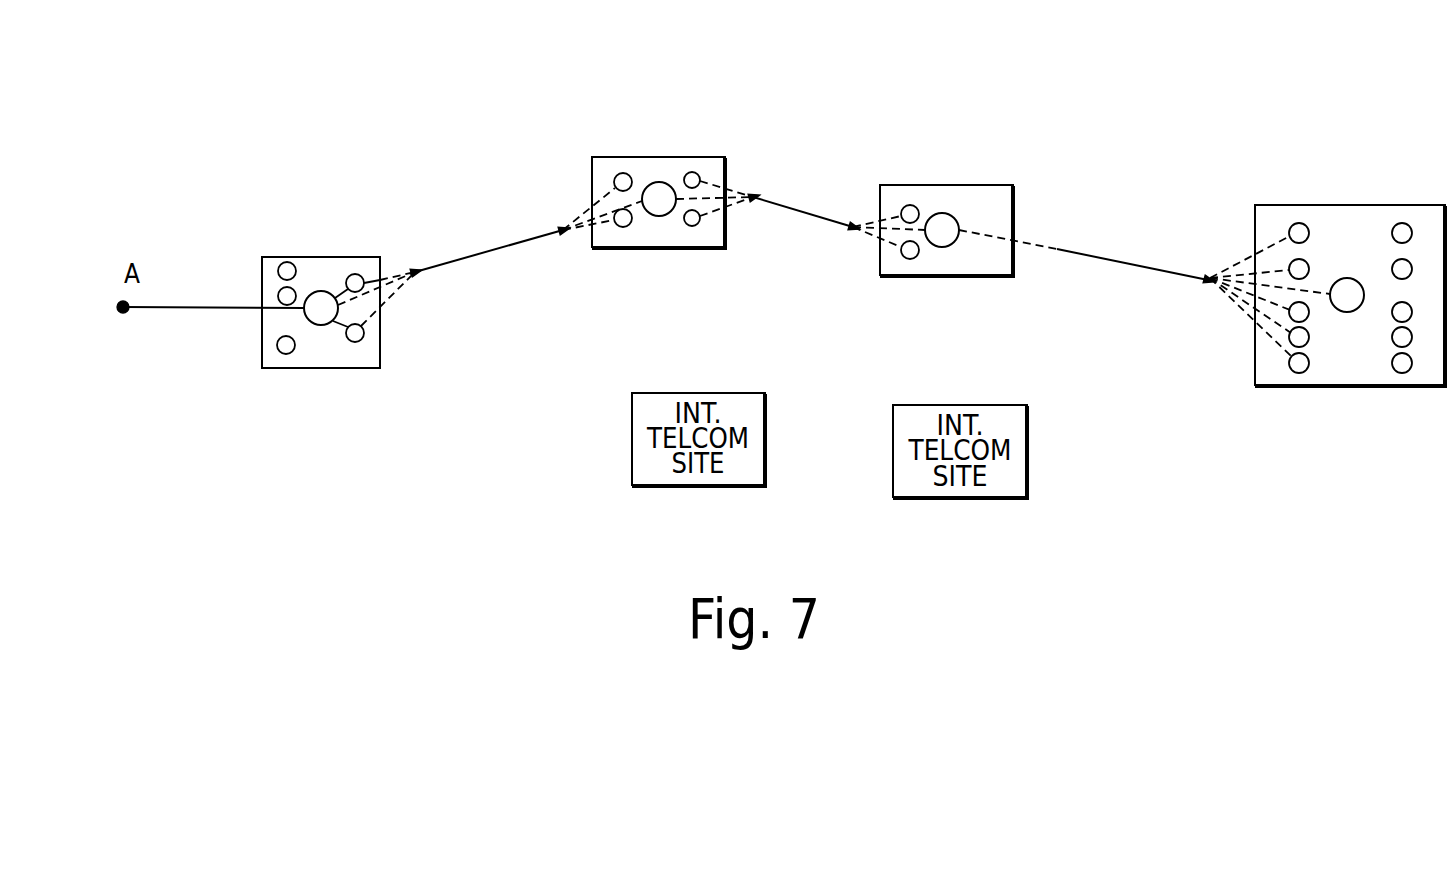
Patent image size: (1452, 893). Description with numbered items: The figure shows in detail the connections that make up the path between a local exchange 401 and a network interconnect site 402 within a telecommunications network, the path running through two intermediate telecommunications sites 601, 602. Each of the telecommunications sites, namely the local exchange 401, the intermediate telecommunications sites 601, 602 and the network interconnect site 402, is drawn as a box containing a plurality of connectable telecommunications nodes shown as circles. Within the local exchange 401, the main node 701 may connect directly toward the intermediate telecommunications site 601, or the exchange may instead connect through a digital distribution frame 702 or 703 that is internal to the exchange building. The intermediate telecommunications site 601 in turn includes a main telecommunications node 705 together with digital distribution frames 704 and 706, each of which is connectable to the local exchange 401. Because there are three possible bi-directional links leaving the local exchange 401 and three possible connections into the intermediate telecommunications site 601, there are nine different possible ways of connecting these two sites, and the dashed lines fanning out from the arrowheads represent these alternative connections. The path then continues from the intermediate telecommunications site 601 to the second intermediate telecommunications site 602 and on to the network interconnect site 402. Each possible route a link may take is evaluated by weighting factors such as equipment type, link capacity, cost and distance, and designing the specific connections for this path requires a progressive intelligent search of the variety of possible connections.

The local exchange 401 is at (282, 257).
The network interconnect site 402 is at (1332, 205).
The intermediate telecommunications site 601 is at (703, 157).
The intermediate telecommunications site 602 is at (910, 192).
The local exchange switch 701 is at (323, 325).
The digital distribution frame 702 is at (356, 274).
The digital distribution frame 703 is at (364, 336).
The digital distribution frame 704 is at (623, 172).
The main telecommunications node 705 is at (659, 182).
The digital distribution frame 706 is at (623, 227).